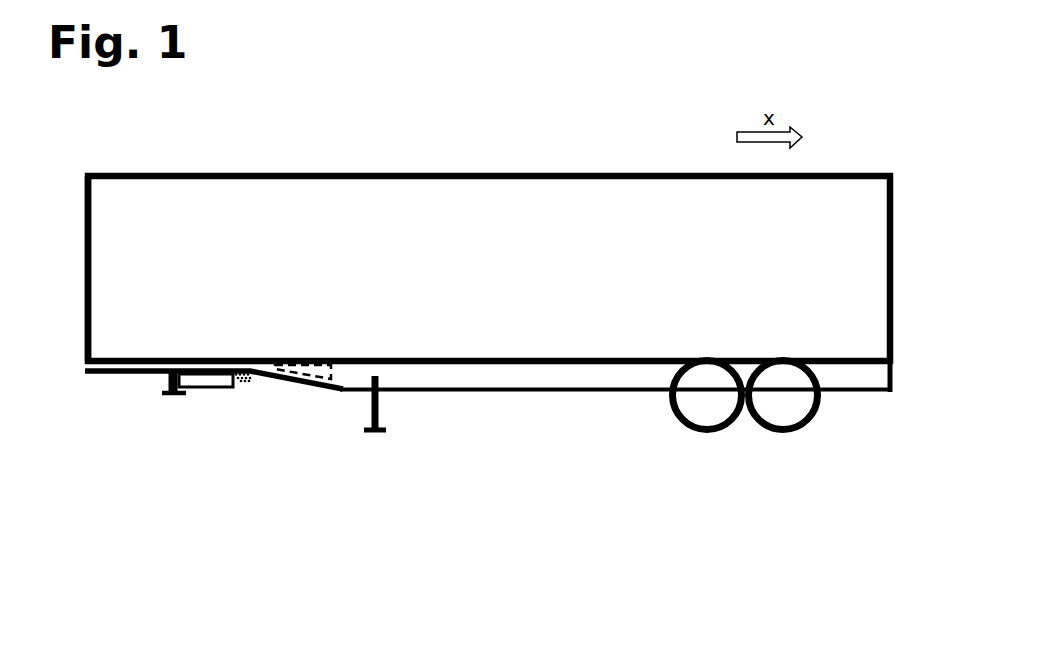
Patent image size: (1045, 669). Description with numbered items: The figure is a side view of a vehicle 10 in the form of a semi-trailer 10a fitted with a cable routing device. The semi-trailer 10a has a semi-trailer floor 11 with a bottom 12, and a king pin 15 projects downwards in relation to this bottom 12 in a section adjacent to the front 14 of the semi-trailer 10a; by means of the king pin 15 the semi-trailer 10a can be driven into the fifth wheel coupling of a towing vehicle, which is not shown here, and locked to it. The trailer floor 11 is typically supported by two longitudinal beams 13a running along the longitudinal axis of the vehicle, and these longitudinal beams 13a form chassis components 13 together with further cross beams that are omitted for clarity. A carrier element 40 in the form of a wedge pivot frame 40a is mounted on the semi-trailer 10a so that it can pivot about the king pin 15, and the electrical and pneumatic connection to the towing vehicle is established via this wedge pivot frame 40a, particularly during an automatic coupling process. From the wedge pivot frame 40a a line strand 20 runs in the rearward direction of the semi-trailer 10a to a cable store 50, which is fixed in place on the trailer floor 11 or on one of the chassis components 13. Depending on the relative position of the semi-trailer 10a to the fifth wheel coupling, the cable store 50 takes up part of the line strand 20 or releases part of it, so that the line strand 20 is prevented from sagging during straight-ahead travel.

The vehicle 10 is at (489, 216).
The semi-trailer 10a is at (489, 284).
The semi-trailer floor 11 is at (487, 361).
The bottom 12 is at (410, 367).
The chassis components 13 is at (130, 378).
The longitudinal beams 13a is at (102, 366).
The front 14 is at (80, 240).
The king pin 15 is at (170, 395).
The line strand 20 is at (250, 376).
The carrier element 40 is at (208, 453).
The wedge pivot frame 40a is at (202, 388).
The cable store 50 is at (343, 373).